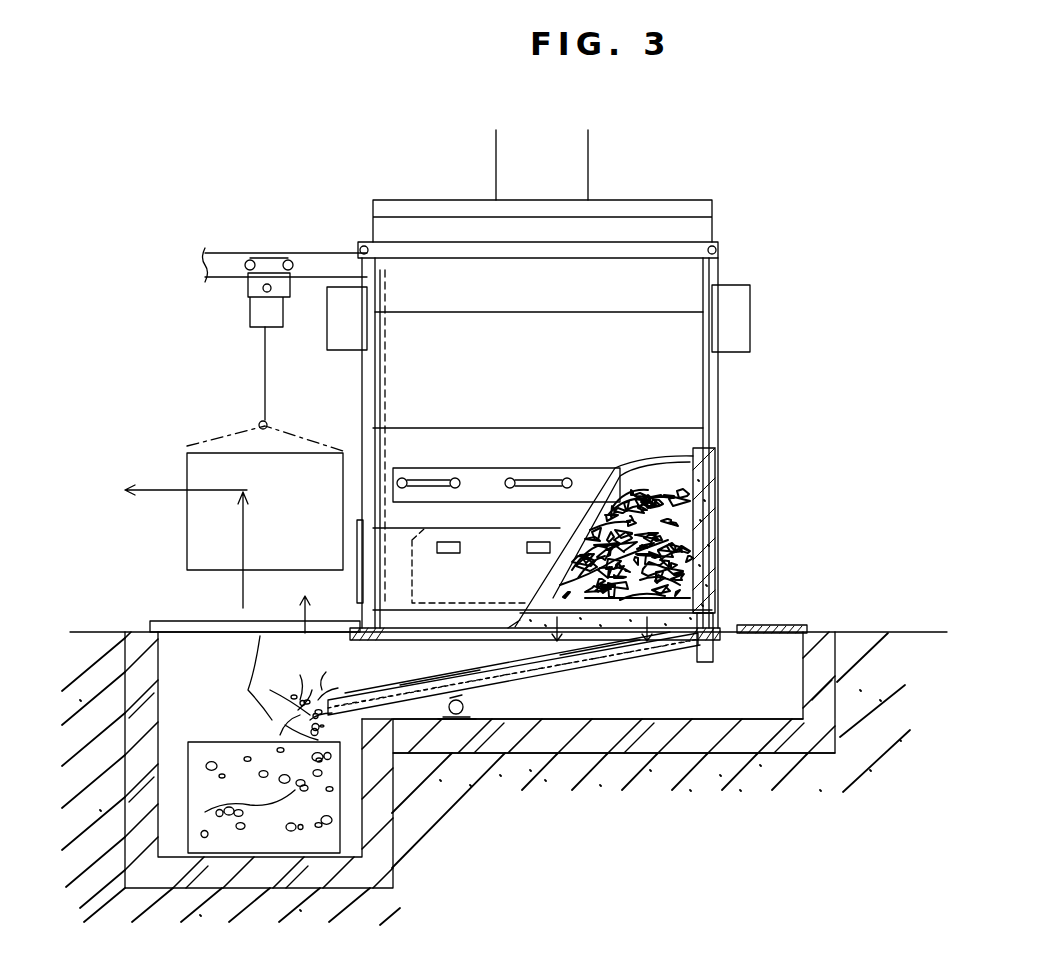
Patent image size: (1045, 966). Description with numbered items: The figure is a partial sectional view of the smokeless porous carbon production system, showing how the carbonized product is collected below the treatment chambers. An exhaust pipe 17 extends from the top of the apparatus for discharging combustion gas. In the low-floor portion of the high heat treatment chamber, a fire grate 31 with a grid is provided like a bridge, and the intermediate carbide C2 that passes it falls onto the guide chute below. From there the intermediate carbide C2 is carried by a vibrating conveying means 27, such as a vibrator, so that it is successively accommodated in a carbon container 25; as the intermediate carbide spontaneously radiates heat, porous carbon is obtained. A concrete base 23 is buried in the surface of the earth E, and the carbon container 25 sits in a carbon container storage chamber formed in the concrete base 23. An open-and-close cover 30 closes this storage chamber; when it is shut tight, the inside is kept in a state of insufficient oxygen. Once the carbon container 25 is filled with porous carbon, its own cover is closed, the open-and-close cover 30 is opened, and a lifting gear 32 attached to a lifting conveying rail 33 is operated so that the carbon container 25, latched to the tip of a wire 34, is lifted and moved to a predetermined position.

The exhaust pipe 17 is at (570, 178).
The concrete base 23 is at (567, 755).
The carbon container 25 is at (203, 475).
The vibrating conveying means 27 is at (630, 653).
The open-and-close cover 30 is at (170, 627).
The fire grate 31 is at (710, 620).
The lifting gear 32 is at (260, 258).
The lifting conveying rail 33 is at (217, 262).
The wire 34 is at (265, 367).
The intermediate carbide C2 is at (720, 515).
The surface of the earth E is at (763, 780).